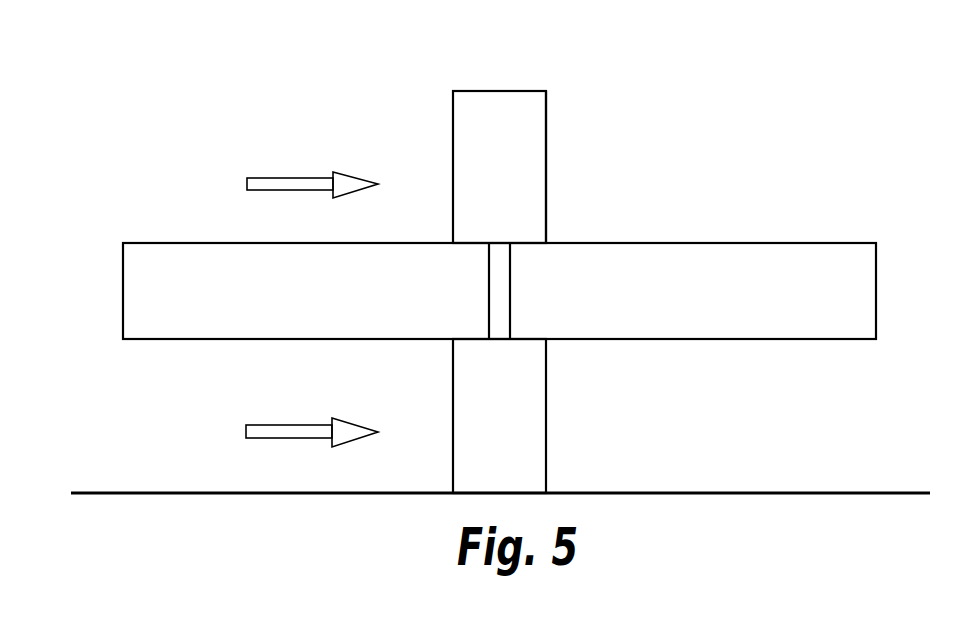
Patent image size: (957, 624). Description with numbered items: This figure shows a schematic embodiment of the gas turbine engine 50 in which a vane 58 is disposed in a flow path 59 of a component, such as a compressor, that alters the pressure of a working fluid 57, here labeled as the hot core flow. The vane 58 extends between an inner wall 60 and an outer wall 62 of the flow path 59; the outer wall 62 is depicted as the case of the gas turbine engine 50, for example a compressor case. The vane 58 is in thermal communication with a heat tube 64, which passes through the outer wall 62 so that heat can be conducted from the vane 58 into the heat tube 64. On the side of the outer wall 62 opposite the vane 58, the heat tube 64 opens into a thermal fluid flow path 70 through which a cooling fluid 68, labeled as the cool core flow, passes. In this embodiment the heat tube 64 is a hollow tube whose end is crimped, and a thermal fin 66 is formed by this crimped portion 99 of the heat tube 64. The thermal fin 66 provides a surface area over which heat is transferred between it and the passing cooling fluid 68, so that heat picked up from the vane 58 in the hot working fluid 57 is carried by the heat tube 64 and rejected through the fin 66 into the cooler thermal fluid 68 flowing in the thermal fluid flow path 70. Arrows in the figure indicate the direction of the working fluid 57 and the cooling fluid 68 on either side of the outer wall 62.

The gas turbine engine 50 is at (677, 82).
The working fluid 57 is at (250, 440).
The vane 58 is at (546, 412).
The flow path 59 is at (313, 478).
The inner wall 60 is at (694, 492).
The outer wall 62 is at (715, 339).
The heat tube 64 is at (489, 290).
The thermal fin 66 is at (546, 156).
The cooling fluid 68 is at (247, 181).
The thermal fluid flow path 70 is at (298, 229).
The crimped portion 99 is at (546, 215).